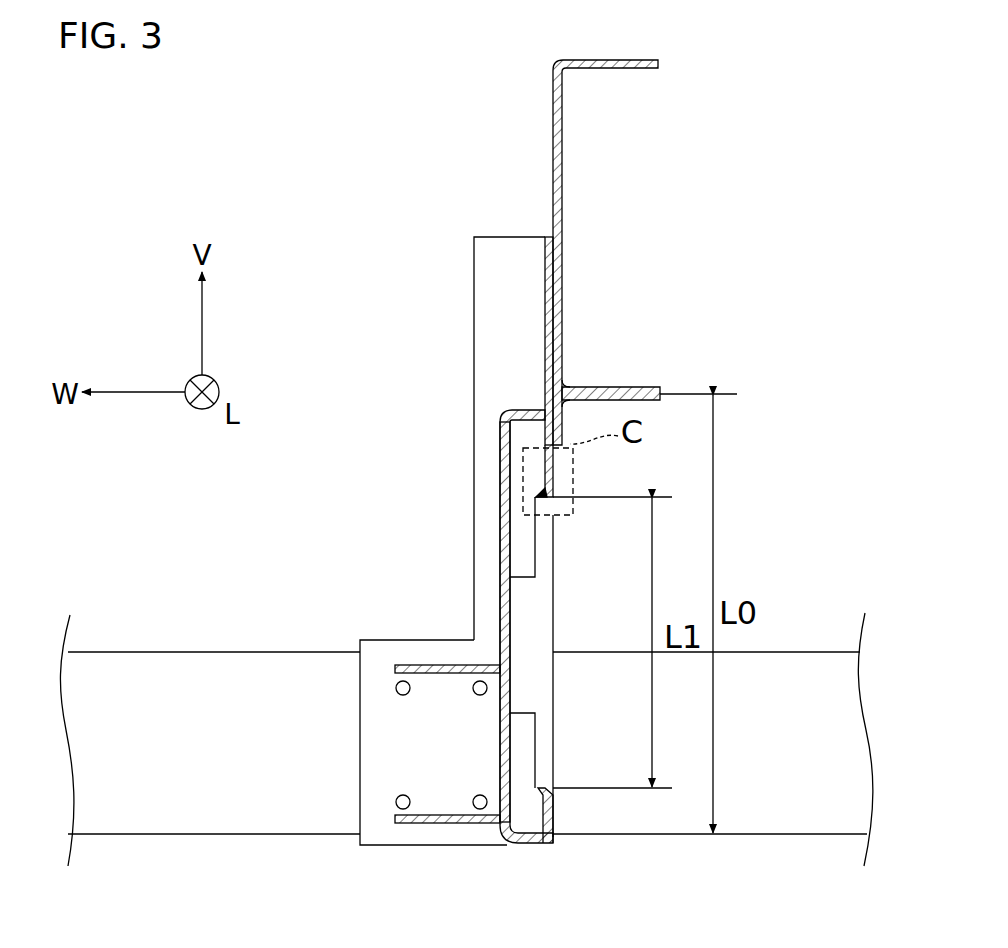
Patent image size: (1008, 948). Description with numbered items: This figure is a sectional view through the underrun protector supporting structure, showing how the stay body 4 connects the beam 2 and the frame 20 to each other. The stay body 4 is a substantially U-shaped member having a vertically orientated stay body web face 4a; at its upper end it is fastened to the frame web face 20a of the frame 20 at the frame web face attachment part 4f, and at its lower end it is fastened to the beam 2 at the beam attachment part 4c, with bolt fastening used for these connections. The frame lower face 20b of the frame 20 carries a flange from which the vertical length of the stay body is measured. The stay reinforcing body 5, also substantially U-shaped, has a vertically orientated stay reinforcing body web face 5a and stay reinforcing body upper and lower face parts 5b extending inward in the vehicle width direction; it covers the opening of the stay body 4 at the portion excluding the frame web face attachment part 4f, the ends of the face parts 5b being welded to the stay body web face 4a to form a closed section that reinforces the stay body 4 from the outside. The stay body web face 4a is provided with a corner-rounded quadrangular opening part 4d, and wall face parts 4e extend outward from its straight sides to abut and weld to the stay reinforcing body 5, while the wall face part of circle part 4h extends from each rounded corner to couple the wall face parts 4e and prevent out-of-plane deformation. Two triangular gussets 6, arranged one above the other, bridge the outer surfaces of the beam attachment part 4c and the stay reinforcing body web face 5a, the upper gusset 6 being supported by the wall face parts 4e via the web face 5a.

The beam 2 is at (813, 651).
The stay body 4 is at (457, 516).
The stay body web face 4a is at (557, 470).
The beam attachment part 4c is at (396, 711).
The opening part 4d is at (541, 640).
The wall face part 4e is at (520, 700).
The frame web face attachment part 4f is at (540, 280).
The wall face part of circle part 4h is at (549, 500).
The stay reinforcing body 5 is at (471, 616).
The stay reinforcing body web face 5a is at (504, 561).
The stay reinforcing body upper and lower face part 5b is at (520, 410).
The gusset 6 is at (450, 665).
The frame 20 is at (673, 252).
The frame web face 20a is at (564, 195).
The frame lower face 20b is at (612, 387).